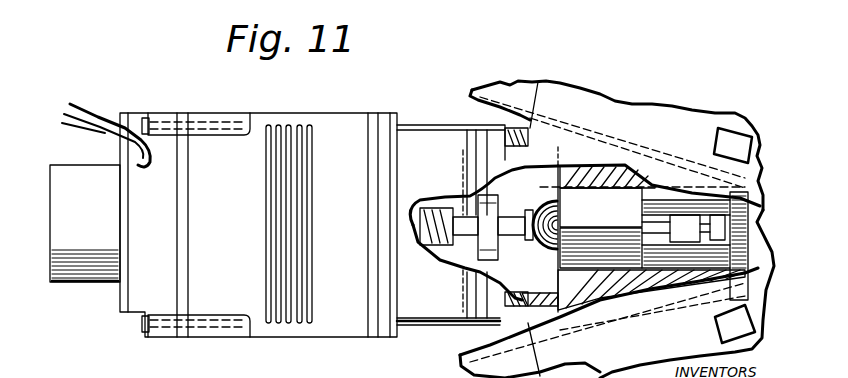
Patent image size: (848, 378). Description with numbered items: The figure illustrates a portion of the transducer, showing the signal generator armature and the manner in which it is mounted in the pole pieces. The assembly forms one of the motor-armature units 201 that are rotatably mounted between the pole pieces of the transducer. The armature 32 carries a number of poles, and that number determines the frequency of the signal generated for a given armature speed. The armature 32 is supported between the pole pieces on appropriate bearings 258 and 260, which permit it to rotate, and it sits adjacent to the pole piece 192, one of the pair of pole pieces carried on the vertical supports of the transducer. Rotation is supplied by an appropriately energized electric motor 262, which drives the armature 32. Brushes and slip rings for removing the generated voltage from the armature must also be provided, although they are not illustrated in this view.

The electric motor 262 is at (348, 128).
The motor-armature unit 201 is at (360, 370).
The bearing 258 is at (511, 238).
The armature 32 is at (602, 205).
The pole piece 192 is at (748, 178).
The bearing 260 is at (772, 222).